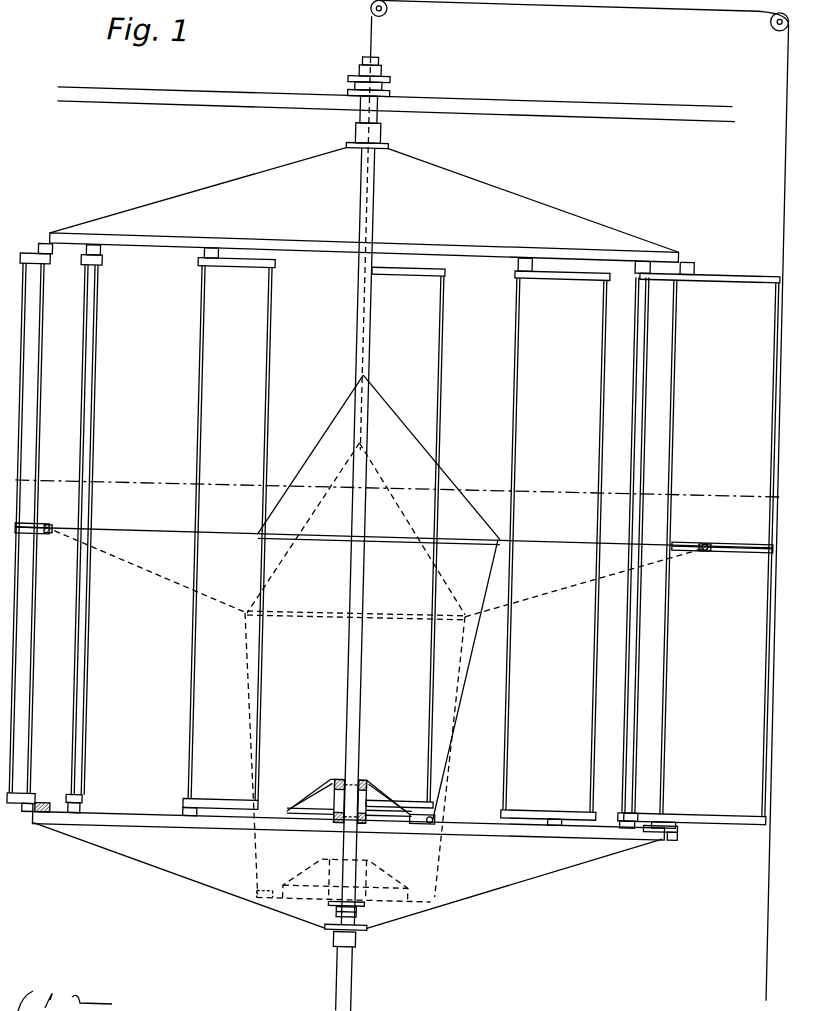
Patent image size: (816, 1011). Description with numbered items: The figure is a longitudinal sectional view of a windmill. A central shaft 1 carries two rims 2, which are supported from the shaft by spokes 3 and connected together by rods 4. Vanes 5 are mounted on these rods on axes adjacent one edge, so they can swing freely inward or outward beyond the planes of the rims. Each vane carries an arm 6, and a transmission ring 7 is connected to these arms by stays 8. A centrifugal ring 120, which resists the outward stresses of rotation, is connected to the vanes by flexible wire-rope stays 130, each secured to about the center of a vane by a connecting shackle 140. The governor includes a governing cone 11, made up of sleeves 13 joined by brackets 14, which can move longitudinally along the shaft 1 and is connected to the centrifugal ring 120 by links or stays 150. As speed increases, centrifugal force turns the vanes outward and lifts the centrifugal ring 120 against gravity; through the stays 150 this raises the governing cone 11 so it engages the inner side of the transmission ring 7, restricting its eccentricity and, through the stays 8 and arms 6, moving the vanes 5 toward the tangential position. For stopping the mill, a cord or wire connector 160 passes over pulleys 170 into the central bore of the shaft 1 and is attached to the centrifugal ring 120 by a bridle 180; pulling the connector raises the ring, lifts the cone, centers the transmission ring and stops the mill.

The shaft 1 is at (368, 364).
The rim 2 is at (550, 243).
The spoke 3 is at (356, 538).
The rod 4 is at (684, 264).
The vane 5 is at (394, 539).
The arm 6 is at (43, 814).
The transmission ring 7 is at (408, 811).
The stay 8 is at (151, 817).
The governing cone 11 is at (322, 798).
The sleeve 13 is at (374, 781).
The bracket 14 is at (393, 799).
The centrifugal ring 120 is at (296, 613).
The stay 130 is at (152, 535).
The connecting shackle 140 is at (47, 534).
The link or stay 150 is at (470, 700).
The connector 160 is at (552, 1).
The pulley 170 is at (374, 12).
The bridle 180 is at (274, 449).